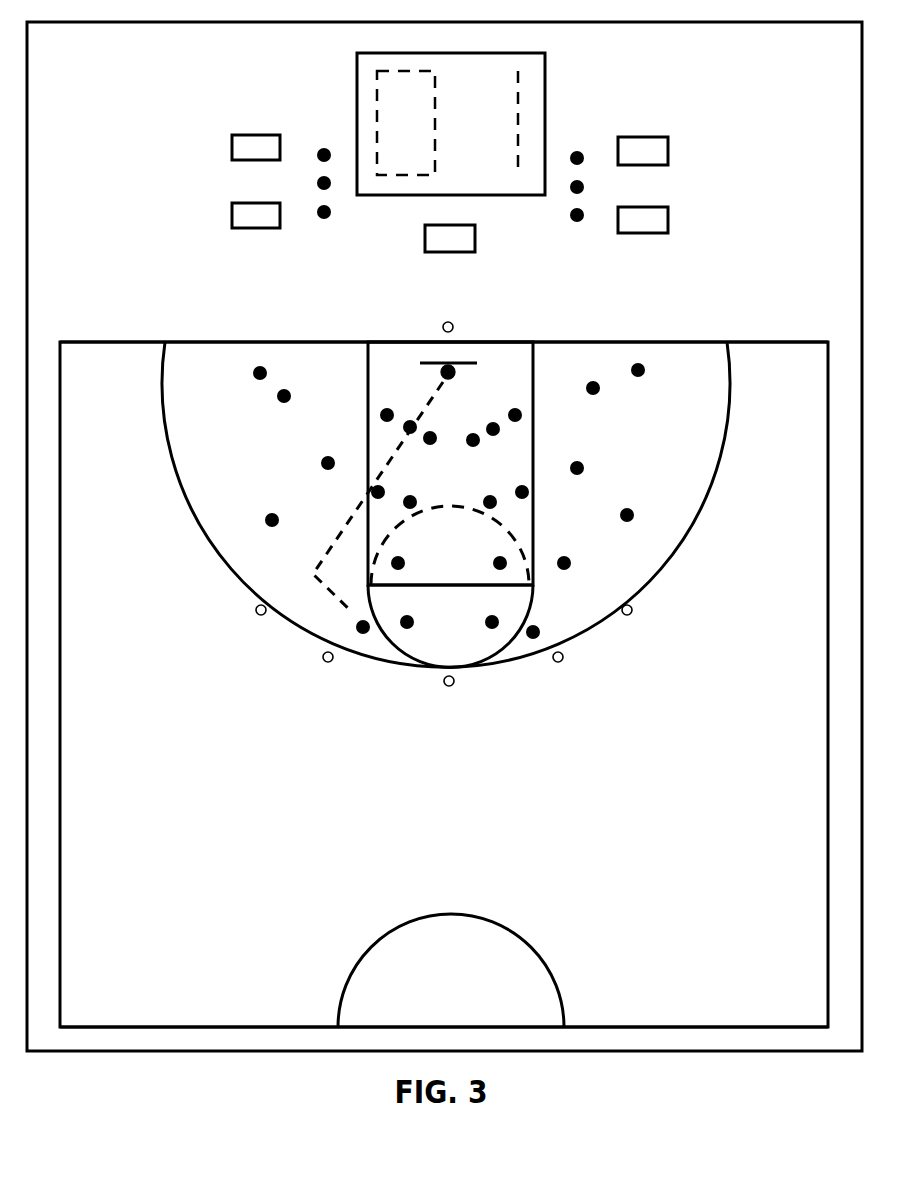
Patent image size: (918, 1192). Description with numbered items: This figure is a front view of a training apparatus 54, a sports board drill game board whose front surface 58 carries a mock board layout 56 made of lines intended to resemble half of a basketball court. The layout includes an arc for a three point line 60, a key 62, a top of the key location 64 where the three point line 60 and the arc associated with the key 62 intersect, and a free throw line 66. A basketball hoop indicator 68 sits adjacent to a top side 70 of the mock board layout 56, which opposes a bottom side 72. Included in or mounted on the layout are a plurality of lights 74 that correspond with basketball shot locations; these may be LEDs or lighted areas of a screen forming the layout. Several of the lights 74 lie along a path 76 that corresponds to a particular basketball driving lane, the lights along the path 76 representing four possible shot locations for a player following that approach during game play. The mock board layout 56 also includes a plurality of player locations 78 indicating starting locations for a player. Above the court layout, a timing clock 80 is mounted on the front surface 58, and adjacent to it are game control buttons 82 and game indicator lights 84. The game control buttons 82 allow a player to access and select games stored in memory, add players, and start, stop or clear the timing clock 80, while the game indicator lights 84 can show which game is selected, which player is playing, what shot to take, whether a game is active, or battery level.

The training apparatus 54 is at (198, 1066).
The mock board layout 56 is at (760, 358).
The front surface 58 is at (86, 241).
The three point line 60 is at (218, 542).
The key 62 is at (436, 560).
The top of the key location 64 is at (463, 670).
The free throw line 66 is at (450, 588).
The basketball hoop indicator 68 is at (438, 362).
The top side 70 is at (197, 340).
The bottom side 72 is at (736, 1026).
The lights 74 is at (577, 468).
The path 76 is at (337, 598).
The player locations 78 is at (566, 660).
The timing clock 80 is at (545, 83).
The game control buttons 82 is at (668, 215).
The game indicator lights 84 is at (573, 192).